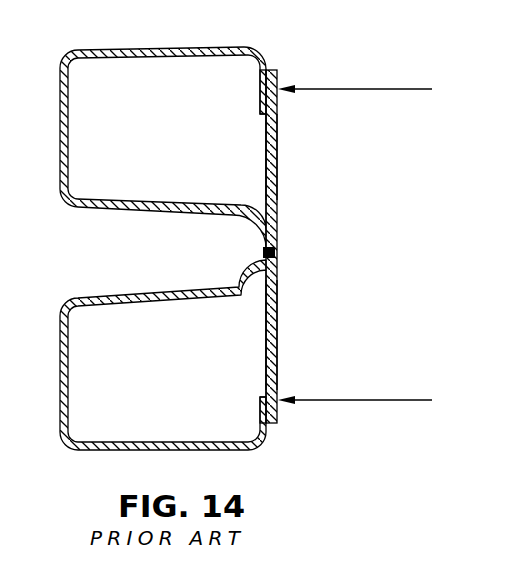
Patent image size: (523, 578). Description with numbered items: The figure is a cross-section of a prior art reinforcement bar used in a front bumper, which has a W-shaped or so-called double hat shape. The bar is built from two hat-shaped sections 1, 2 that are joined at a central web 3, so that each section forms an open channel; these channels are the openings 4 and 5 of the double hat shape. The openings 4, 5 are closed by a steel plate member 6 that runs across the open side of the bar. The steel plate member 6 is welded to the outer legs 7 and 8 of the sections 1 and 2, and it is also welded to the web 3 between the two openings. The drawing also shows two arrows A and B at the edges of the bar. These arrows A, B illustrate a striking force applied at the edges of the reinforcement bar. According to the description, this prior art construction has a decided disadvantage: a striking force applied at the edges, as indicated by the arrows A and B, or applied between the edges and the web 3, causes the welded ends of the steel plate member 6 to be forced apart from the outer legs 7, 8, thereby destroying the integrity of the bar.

The section 1 is at (144, 66).
The section 2 is at (146, 436).
The web 3 is at (263, 252).
The opening 4 is at (259, 134).
The opening 5 is at (259, 331).
The steel plate member 6 is at (277, 184).
The outer leg 7 is at (260, 93).
The outer leg 8 is at (260, 406).
The arrow A is at (366, 90).
The arrow B is at (367, 401).